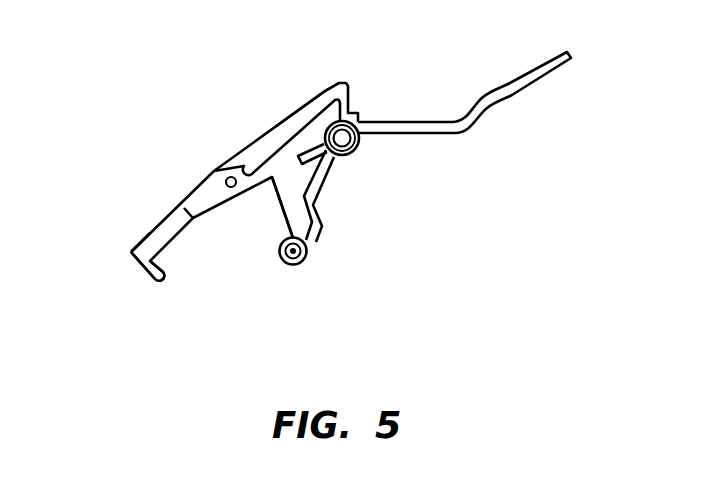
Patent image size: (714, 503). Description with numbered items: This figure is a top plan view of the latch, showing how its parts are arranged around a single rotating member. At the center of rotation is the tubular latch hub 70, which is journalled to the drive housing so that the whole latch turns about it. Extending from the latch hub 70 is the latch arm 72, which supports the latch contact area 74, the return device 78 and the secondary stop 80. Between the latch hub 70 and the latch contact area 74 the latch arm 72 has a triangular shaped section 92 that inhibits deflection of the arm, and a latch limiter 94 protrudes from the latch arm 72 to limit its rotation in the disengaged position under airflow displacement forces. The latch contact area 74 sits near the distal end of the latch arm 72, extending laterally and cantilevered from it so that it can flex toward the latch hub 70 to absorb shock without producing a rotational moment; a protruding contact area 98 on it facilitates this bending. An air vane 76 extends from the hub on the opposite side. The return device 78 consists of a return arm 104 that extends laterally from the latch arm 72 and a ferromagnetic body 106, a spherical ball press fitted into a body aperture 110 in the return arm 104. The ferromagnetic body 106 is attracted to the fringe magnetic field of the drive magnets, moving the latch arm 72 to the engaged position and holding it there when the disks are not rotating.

The latch hub 70 is at (360, 149).
The latch arm 72 is at (173, 210).
The latch contact area 74 is at (133, 253).
The air vane 76 is at (407, 122).
The return device 78 is at (314, 206).
The secondary stop 80 is at (231, 188).
The triangular shaped section 92 is at (305, 105).
The latch limiter 94 is at (214, 170).
The protruding contact area 98 is at (156, 276).
The return arm 104 is at (291, 206).
The ferromagnetic body 106 is at (301, 261).
The body aperture 110 is at (307, 251).